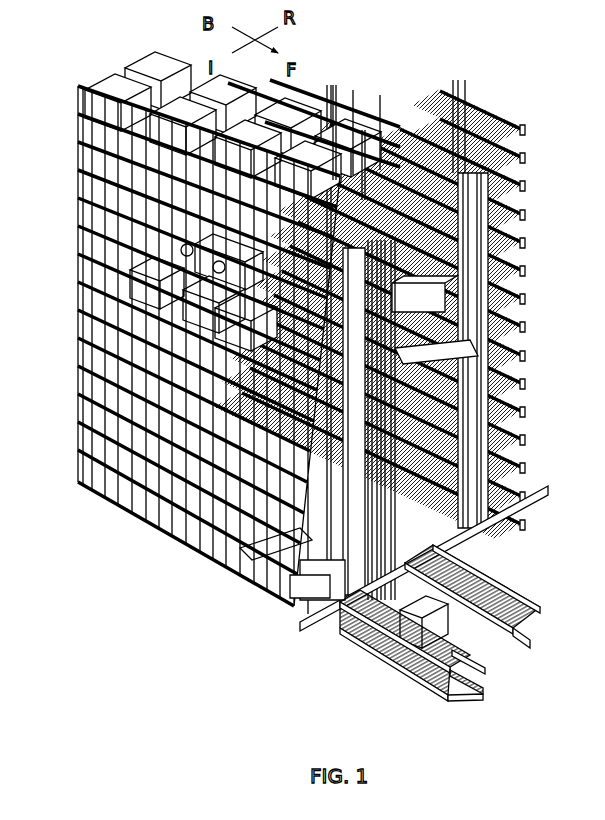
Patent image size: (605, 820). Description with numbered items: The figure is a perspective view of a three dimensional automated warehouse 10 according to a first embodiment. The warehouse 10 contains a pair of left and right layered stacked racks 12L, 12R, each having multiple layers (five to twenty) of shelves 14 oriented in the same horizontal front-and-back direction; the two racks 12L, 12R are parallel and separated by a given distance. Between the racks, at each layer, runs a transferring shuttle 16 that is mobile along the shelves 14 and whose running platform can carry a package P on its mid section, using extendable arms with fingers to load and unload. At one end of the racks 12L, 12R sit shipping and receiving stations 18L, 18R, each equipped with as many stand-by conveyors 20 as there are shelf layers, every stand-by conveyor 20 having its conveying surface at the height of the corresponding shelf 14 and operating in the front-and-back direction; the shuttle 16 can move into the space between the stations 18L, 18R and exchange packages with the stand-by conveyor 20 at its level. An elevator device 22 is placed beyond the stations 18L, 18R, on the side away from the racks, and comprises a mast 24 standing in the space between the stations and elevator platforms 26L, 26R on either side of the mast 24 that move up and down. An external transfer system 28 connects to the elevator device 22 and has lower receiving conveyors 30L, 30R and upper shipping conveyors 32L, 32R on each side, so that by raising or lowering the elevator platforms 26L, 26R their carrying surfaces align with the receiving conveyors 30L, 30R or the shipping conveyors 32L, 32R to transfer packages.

The three dimensional automated warehouse 10 is at (506, 100).
The left layered stacked rack 12L is at (210, 322).
The right layered stacked rack 12R is at (158, 74).
The shelf 14 is at (78, 206).
The transferring shuttle 16 is at (112, 313).
The left shipping and receiving station 18L is at (383, 177).
The right shipping and receiving station 18R is at (337, 190).
The stand-by conveyor 20 is at (443, 352).
The elevator device 22 is at (333, 604).
The mast 24 is at (335, 597).
The left elevator platform 26L is at (317, 584).
The right elevator platform 26R is at (432, 297).
The external transfer system 28 is at (403, 675).
The left lower transfer conveyor 30L is at (465, 687).
The right lower transfer conveyor 30R is at (528, 645).
The left upper transfer conveyor 32L is at (471, 657).
The right upper transfer conveyor 32R is at (538, 611).
The package P is at (140, 278).